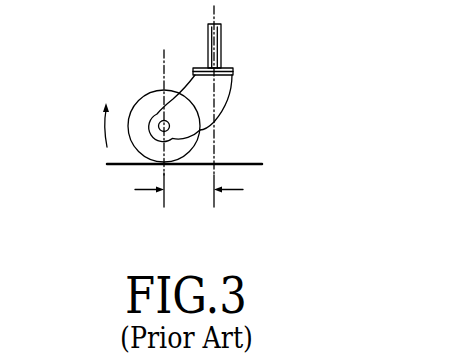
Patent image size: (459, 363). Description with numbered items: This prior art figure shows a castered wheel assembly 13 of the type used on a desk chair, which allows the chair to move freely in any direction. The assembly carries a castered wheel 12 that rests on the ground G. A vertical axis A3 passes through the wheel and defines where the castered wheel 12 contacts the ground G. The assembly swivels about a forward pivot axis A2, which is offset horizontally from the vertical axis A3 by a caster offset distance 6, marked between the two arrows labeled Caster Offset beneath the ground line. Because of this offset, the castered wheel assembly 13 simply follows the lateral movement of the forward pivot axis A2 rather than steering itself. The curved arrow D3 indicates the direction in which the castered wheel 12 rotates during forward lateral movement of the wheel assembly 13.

The castered wheel assembly 13 is at (298, 58).
The castered wheel 12 is at (134, 102).
The caster offset distance 6 is at (188, 189).
The forward pivot axis A2 is at (214, 152).
The vertical axis A3 is at (163, 89).
The arrow indicating direction of wheel rotation D3 is at (102, 128).
The ground G is at (110, 163).